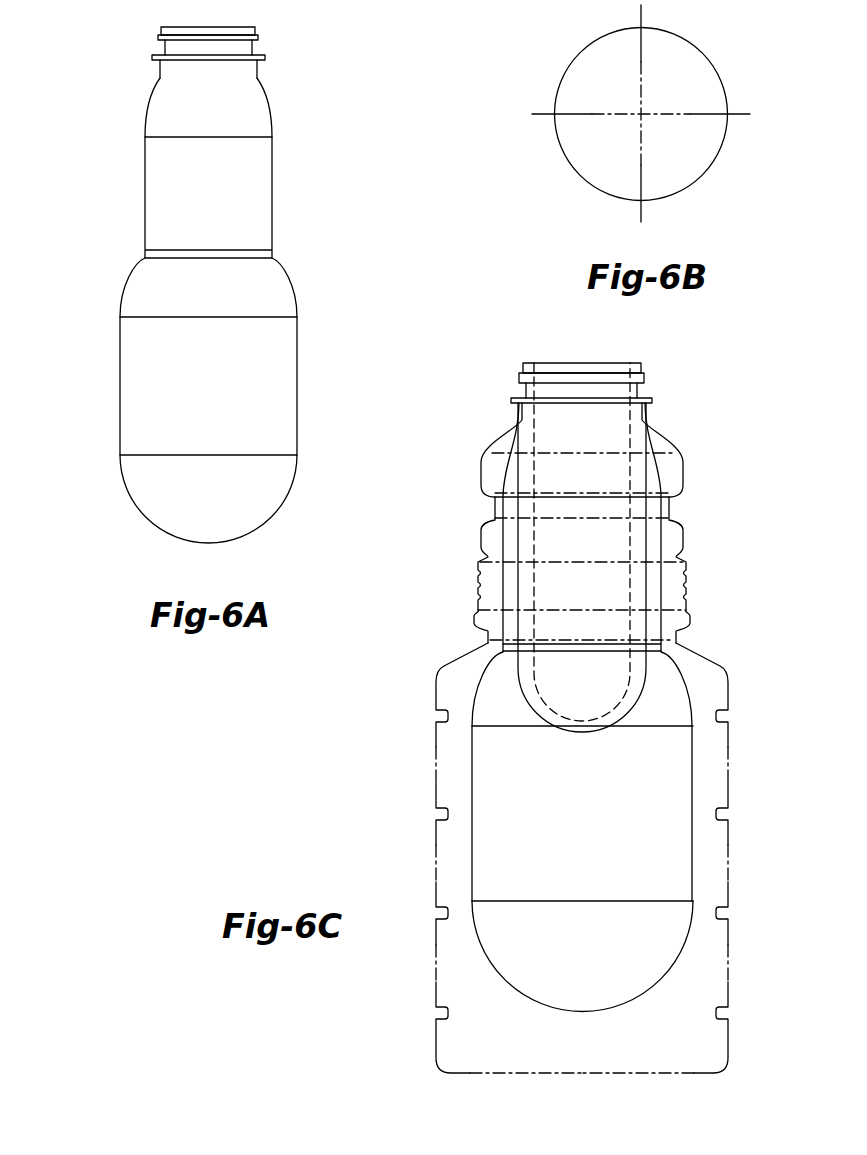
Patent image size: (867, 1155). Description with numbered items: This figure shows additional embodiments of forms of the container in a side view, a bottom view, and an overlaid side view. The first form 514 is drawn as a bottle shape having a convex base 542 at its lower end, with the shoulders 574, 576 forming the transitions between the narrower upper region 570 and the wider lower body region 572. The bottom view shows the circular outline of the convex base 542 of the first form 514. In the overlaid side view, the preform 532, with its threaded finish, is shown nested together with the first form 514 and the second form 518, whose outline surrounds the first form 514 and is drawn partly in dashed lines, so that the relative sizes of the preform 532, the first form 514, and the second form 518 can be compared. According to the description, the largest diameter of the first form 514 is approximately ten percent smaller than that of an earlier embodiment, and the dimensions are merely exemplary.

In FIG. 6A, the first form 514 is at (209, 287).
In FIG. 6B, the first form 514 is at (656, 113).
In FIG. 6C, the first form 514 is at (553, 708).
In FIG. 6C, the second form 518 is at (434, 858).
In FIG. 6C, the preform 532 is at (652, 537).
In FIG. 6A, the convex base 542 is at (258, 528).
In FIG. 6B, the convex base 542 is at (697, 182).
In FIG. 6C, the convex base 542 is at (640, 992).
In FIG. 6A, the upper body portion 570 is at (272, 175).
In FIG. 6A, the lower body portion 572 is at (297, 422).
In FIG. 6A, the shoulder 574 is at (272, 100).
In FIG. 6A, the shoulder 576 is at (297, 290).